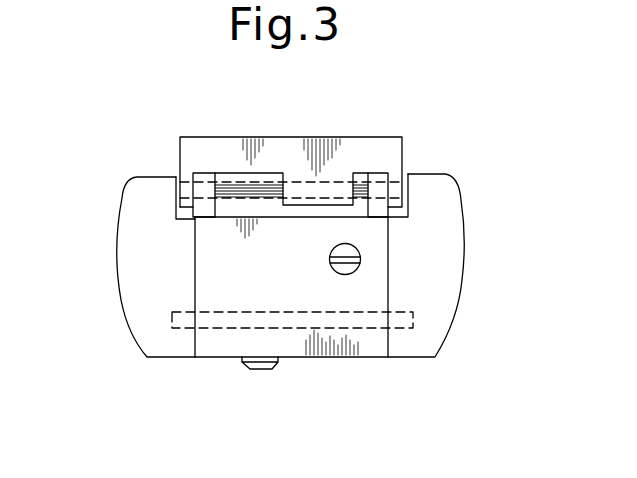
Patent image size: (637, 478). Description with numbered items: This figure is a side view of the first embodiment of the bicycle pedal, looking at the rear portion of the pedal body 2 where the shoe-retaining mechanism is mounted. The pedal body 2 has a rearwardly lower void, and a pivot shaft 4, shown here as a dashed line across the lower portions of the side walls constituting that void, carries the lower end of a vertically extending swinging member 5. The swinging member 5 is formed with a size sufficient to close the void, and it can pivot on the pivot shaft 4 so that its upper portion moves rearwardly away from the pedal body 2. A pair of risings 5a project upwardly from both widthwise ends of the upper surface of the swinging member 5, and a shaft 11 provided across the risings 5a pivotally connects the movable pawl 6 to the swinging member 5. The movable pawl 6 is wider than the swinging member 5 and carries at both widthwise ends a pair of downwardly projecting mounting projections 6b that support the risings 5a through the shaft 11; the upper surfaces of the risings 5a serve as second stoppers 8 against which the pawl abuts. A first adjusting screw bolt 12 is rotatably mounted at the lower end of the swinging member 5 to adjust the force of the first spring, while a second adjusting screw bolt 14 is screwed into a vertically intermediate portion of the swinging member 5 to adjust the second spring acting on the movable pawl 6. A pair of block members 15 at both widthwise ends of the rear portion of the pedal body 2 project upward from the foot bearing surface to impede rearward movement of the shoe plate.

The pedal body 2 is at (443, 170).
The pivot shaft 4 is at (292, 322).
The swinging member 5 is at (383, 265).
The risings 5a is at (208, 172).
The movable pawl 6 is at (308, 135).
The mounting projections 6b is at (180, 203).
The second stoppers 8 is at (200, 170).
The shaft 11 is at (252, 182).
The first adjusting screw bolt 12 is at (255, 369).
The second adjusting screw bolt 14 is at (350, 268).
The block members 15 is at (162, 188).